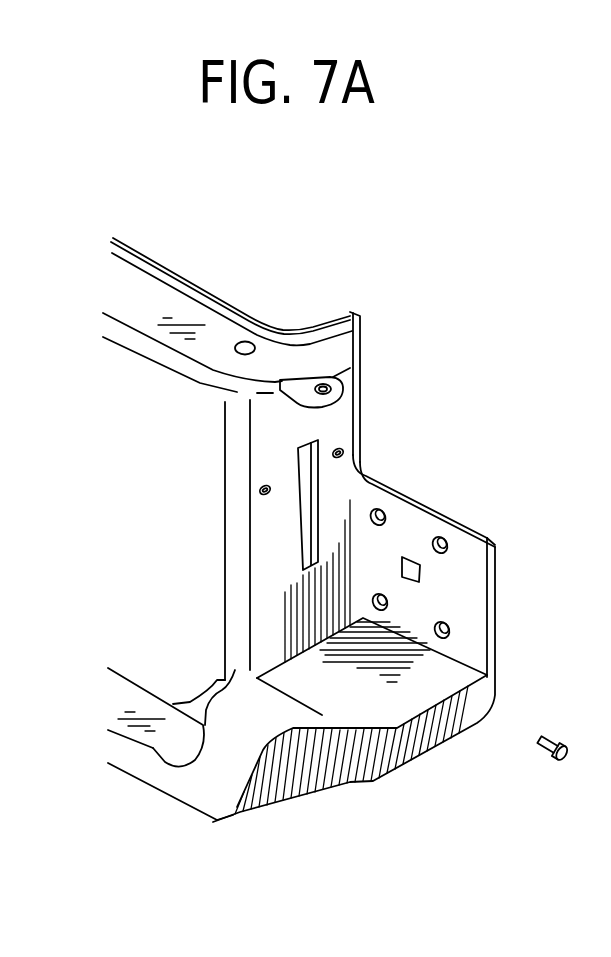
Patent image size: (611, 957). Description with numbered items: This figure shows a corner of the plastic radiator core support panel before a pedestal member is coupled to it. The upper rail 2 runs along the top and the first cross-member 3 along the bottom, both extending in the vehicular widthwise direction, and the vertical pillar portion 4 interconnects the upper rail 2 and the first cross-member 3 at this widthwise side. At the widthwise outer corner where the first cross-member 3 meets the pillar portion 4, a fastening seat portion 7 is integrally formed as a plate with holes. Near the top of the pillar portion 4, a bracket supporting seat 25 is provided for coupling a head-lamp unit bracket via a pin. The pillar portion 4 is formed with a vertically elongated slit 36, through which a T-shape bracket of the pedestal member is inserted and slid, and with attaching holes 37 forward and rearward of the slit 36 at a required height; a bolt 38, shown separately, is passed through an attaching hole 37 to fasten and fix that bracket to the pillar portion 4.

The upper rail 2 is at (175, 300).
The first cross-member 3 is at (153, 745).
The pillar portion 4 is at (257, 623).
The fastening seat portion 7 is at (470, 595).
The bracket supporting seat 25 is at (310, 377).
The slit 36 is at (310, 513).
The attaching hole 37 is at (260, 487).
The bolt 38 is at (543, 757).